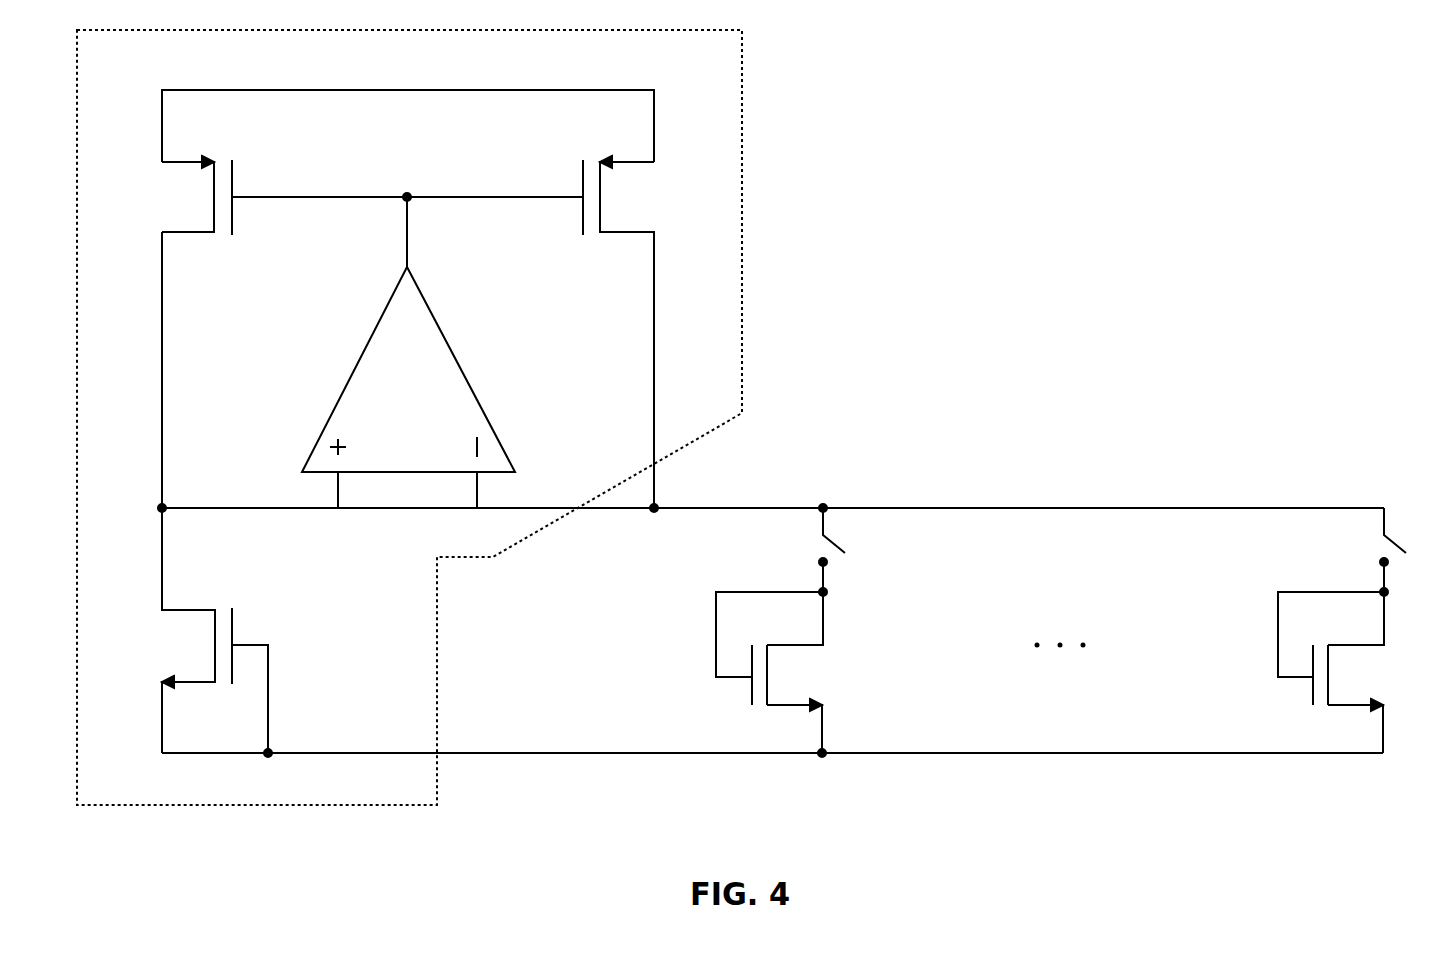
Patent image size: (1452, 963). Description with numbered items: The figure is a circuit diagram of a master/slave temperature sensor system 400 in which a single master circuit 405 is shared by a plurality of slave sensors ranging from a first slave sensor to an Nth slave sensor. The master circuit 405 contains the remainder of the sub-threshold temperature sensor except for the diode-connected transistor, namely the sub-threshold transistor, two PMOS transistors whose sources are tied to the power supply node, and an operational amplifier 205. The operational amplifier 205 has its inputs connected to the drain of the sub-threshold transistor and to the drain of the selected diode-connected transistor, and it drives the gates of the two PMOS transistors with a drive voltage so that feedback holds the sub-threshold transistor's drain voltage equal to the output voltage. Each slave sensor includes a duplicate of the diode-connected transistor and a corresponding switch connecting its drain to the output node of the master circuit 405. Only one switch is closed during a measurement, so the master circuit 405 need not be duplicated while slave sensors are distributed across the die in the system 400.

The master/slave temperature sensor system 400 is at (980, 68).
The master circuit 405 is at (742, 250).
The operational amplifier 205 is at (453, 352).